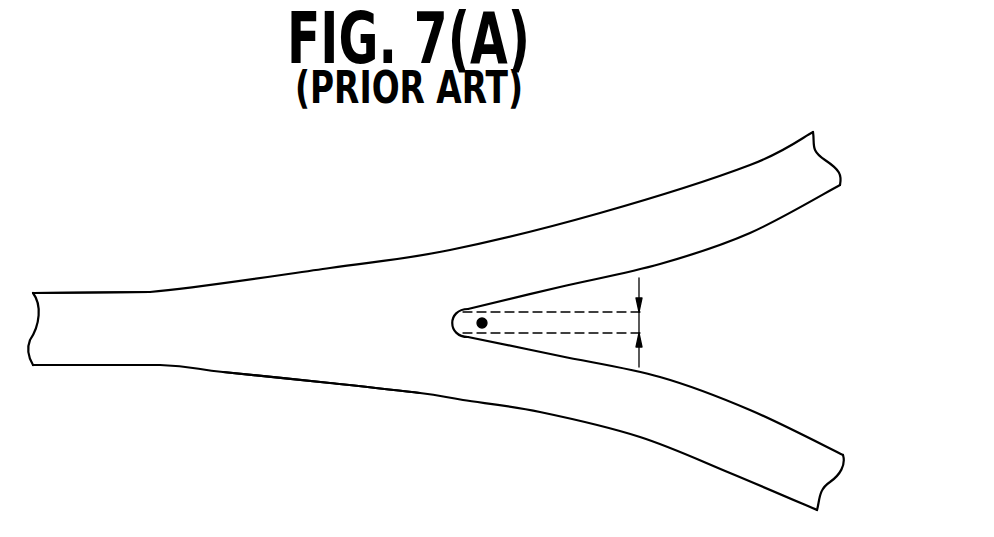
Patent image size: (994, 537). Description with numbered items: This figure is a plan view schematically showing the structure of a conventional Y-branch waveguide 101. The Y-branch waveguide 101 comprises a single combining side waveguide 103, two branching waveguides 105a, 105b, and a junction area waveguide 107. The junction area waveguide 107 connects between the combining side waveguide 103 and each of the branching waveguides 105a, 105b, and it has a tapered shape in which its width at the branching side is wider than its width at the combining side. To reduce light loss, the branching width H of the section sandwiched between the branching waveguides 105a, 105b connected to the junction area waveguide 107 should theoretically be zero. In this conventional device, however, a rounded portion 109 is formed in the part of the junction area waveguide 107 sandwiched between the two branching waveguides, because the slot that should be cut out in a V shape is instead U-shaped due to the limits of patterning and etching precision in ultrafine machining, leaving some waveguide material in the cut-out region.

The Y-branch waveguide 101 is at (343, 213).
The combining side waveguide 103 is at (168, 320).
The branching waveguide 105a is at (725, 195).
The branching waveguide 105b is at (658, 425).
The junction area waveguide 107 is at (333, 358).
The rounded portion 109 is at (486, 323).
The branching width H is at (639, 320).